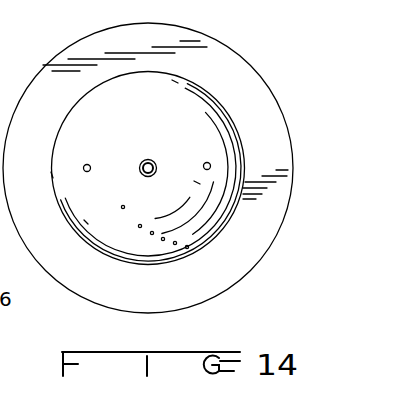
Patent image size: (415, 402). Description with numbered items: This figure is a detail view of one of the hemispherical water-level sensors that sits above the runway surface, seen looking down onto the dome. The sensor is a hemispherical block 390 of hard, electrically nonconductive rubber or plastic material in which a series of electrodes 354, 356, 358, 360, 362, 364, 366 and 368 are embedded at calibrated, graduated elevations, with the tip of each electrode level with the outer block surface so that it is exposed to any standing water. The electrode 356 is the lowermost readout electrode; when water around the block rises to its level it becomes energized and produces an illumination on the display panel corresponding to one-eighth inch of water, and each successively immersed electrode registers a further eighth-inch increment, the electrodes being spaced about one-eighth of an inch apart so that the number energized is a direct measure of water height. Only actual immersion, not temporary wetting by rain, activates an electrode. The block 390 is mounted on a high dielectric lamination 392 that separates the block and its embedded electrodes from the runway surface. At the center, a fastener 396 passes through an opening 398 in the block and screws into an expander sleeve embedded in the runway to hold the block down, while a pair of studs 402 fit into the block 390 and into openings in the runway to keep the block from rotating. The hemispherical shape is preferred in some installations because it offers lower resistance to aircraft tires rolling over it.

The electrode 354 is at (206, 235).
The electrode 356 is at (187, 247).
The electrode 358 is at (175, 243).
The electrode 360 is at (163, 239).
The electrode 362 is at (152, 233).
The electrode 364 is at (140, 226).
The electrode 366 is at (132, 216).
The electrode 368 is at (122, 206).
The hemispherical block 390 is at (202, 112).
The high dielectric lamination 392 is at (265, 208).
The fastener 396 is at (142, 163).
The opening 398 is at (145, 161).
The studs 402 is at (82, 167).